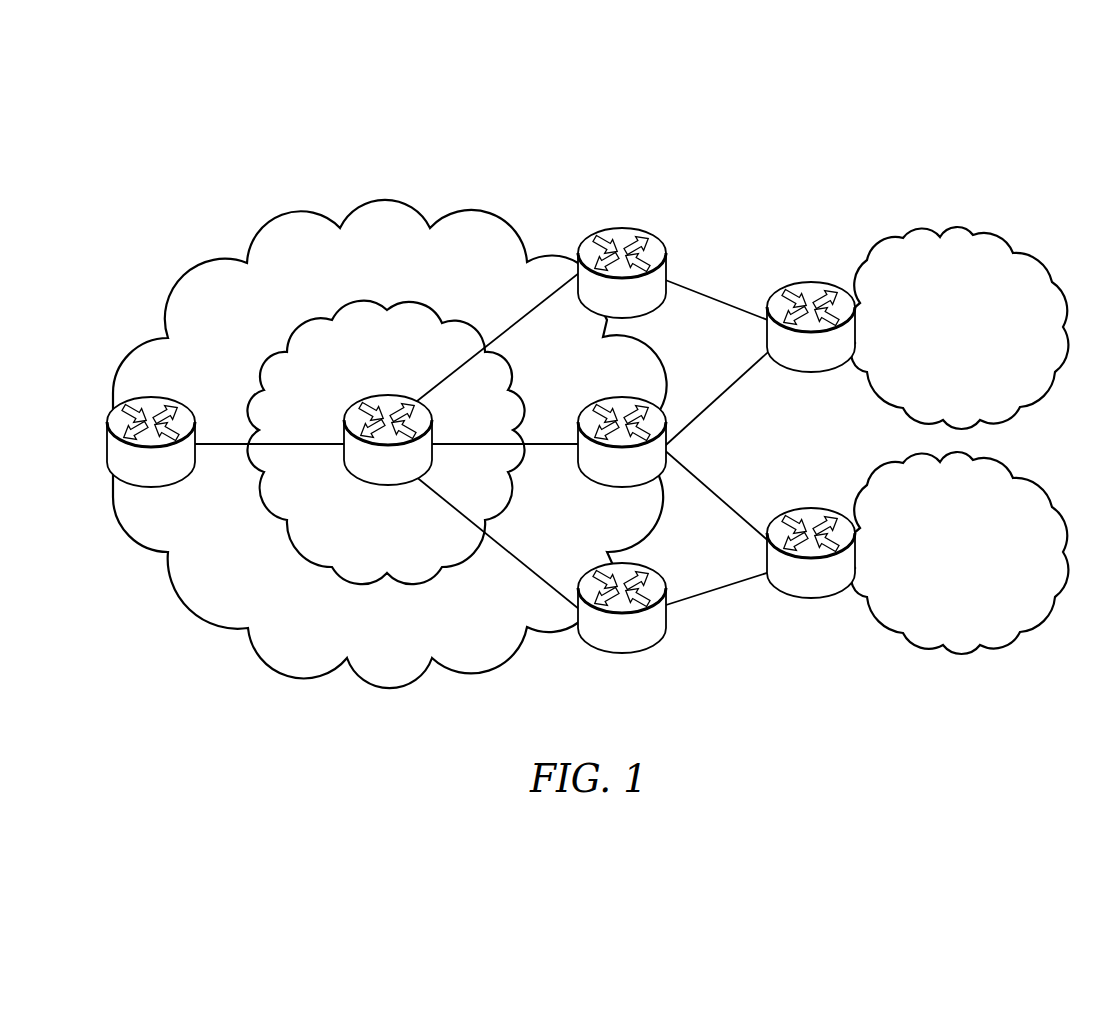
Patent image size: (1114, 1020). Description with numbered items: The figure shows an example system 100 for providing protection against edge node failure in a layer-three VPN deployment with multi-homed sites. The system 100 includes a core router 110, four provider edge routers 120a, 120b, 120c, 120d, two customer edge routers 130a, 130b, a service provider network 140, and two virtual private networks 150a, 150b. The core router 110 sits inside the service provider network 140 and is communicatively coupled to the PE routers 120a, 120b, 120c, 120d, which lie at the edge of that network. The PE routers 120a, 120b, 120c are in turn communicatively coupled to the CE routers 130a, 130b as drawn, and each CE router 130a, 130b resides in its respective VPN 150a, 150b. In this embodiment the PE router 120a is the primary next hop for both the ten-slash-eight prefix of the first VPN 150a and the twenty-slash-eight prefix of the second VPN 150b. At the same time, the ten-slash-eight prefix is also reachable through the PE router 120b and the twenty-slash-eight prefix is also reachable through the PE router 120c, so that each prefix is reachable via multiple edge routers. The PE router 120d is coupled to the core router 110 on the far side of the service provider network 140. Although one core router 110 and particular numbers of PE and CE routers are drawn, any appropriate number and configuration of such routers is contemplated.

The system 100 is at (752, 139).
The core router 110 is at (365, 486).
The PE router 120a is at (593, 485).
The PE router 120b is at (627, 228).
The PE router 120c is at (630, 653).
The PE router 120d is at (107, 449).
The CE router 130a is at (811, 283).
The CE router 130b is at (813, 599).
The service provider network 140 is at (283, 205).
The virtual private network 150a is at (968, 231).
The virtual private network 150b is at (968, 656).